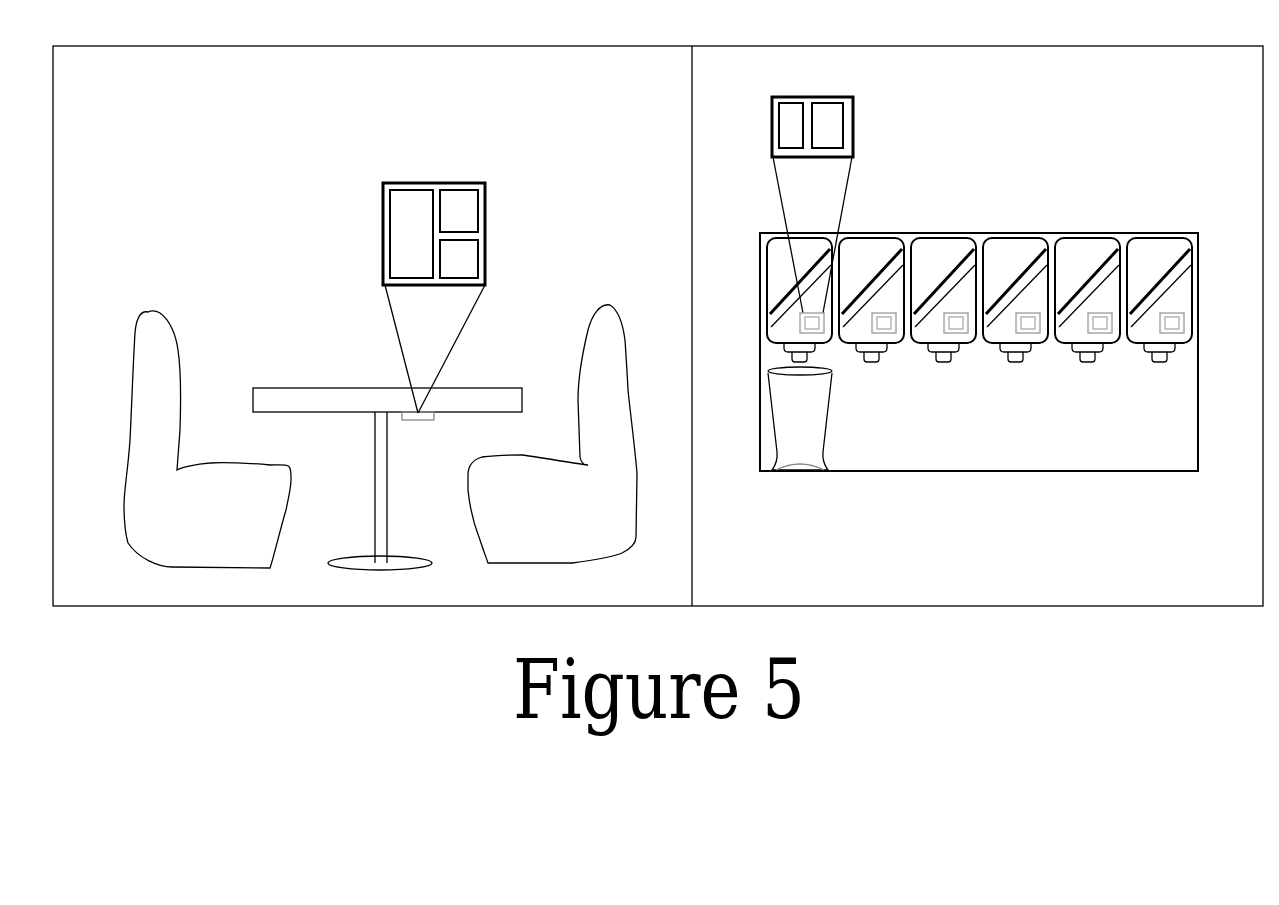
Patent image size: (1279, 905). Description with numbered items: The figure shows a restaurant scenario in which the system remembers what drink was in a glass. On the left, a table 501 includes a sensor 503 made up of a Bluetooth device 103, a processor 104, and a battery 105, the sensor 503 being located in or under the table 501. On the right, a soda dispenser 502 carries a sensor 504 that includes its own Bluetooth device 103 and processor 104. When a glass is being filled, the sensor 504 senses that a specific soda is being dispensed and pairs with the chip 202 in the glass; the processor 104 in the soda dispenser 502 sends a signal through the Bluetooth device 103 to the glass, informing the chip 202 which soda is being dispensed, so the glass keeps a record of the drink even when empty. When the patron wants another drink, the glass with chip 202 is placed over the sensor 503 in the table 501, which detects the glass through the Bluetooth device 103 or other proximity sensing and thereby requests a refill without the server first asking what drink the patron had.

The Bluetooth device 103 is at (760, 115).
The processor 104 is at (908, 113).
The battery 105 is at (372, 202).
The chip 202 is at (795, 492).
The table 501 is at (387, 465).
The soda dispenser 502 is at (1002, 352).
The sensor 503 is at (434, 285).
The sensor 504 is at (790, 205).